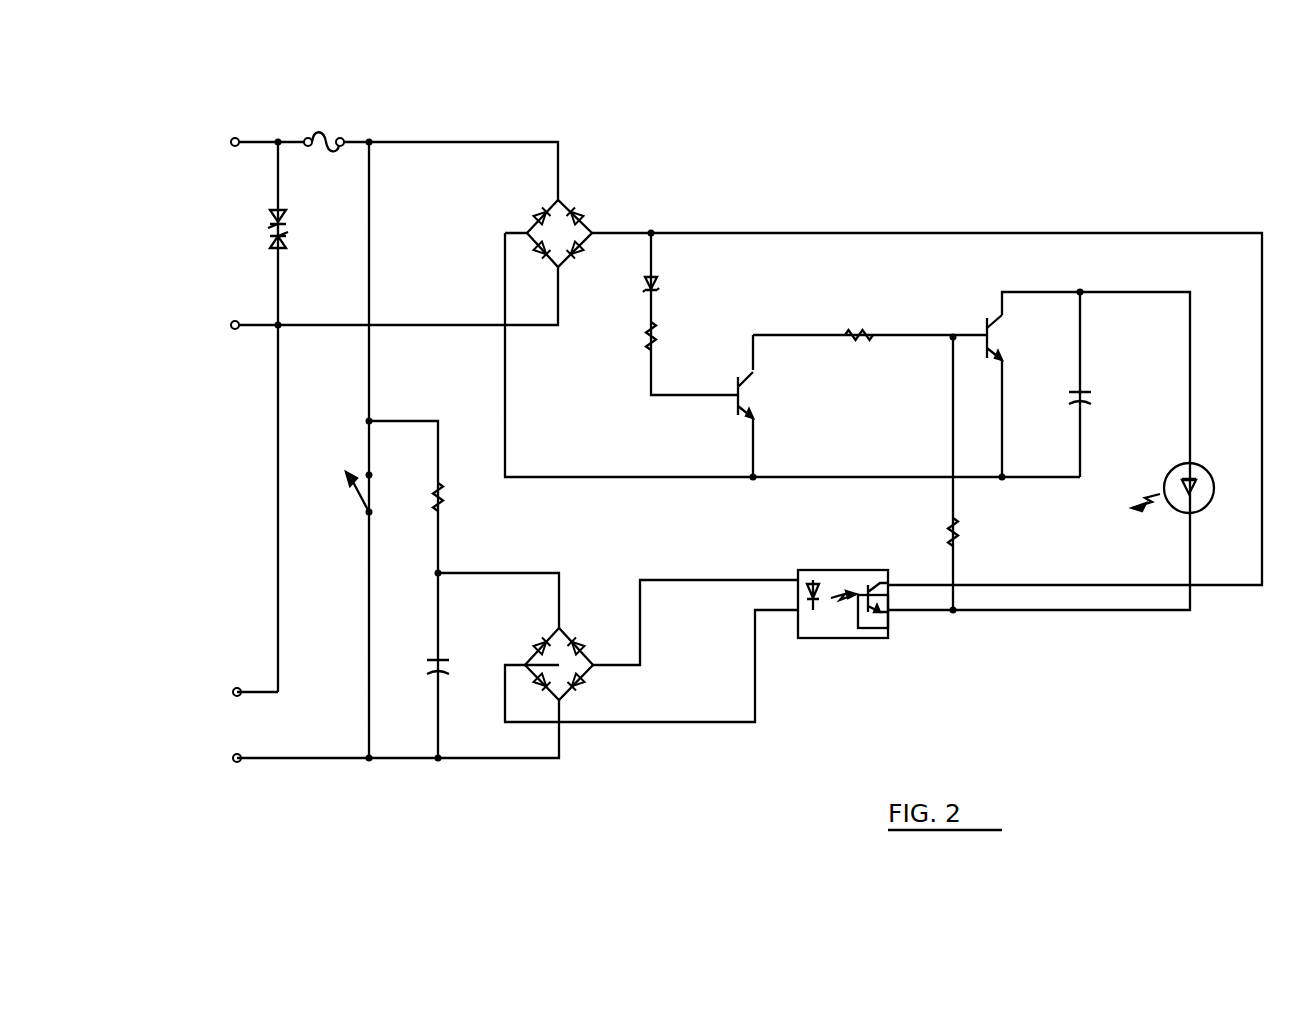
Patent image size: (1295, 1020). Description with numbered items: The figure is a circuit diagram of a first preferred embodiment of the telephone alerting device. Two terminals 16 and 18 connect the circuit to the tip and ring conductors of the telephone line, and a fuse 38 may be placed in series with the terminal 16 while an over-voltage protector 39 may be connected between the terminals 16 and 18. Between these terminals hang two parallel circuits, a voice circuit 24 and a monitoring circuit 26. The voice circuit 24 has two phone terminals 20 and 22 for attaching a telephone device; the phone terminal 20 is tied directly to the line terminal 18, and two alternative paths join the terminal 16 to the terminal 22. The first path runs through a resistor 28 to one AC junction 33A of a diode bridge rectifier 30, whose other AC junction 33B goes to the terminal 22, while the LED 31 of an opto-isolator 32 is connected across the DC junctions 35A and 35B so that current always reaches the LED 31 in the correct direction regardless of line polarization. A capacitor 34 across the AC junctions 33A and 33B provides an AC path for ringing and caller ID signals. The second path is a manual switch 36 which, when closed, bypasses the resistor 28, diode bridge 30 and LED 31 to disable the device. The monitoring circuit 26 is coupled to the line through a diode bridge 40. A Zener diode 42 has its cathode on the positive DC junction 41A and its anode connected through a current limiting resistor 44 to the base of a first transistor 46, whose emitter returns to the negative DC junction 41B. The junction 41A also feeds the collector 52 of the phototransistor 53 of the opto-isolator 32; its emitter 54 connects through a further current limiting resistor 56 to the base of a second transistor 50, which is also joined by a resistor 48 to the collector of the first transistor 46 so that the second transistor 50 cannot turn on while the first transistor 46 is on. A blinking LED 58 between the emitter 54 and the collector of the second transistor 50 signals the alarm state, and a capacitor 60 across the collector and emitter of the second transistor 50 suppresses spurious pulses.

The tip terminal 16 is at (231, 139).
The ring terminal 18 is at (232, 329).
The phone terminal 20 is at (233, 695).
The phone terminal 22 is at (233, 762).
The voice circuit 24 is at (607, 766).
The monitoring circuit 26 is at (1008, 200).
The resistor 28 is at (445, 512).
The diode bridge rectifier 30 is at (563, 646).
The LED of opto-isolator 31 is at (814, 577).
The opto-isolator 32 is at (878, 610).
The AC junction 33A is at (555, 633).
The AC junction 33B is at (565, 702).
The capacitor 34 is at (433, 660).
The DC junction 35A is at (592, 660).
The DC junction 35B is at (525, 664).
The manual switch 36 is at (372, 492).
The fuse 38 is at (317, 136).
The over-voltage protector 39 is at (288, 232).
The diode bridge 40 is at (558, 207).
The positive DC junction 41A is at (598, 230).
The negative DC junction 41B is at (527, 224).
The Zener diode 42 is at (658, 281).
The current limiting resistor 44 is at (658, 332).
The first transistor 46 is at (750, 388).
The resistor 48 is at (858, 330).
The second transistor 50 is at (1000, 323).
The collector of phototransistor 52 is at (884, 580).
The phototransistor 53 is at (866, 586).
The emitter of phototransistor 54 is at (885, 612).
The current limiting resistor 56 is at (960, 526).
The blinking LED 58 is at (1205, 468).
The capacitor 60 is at (1088, 393).